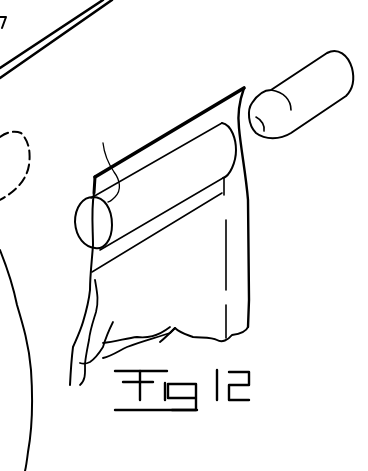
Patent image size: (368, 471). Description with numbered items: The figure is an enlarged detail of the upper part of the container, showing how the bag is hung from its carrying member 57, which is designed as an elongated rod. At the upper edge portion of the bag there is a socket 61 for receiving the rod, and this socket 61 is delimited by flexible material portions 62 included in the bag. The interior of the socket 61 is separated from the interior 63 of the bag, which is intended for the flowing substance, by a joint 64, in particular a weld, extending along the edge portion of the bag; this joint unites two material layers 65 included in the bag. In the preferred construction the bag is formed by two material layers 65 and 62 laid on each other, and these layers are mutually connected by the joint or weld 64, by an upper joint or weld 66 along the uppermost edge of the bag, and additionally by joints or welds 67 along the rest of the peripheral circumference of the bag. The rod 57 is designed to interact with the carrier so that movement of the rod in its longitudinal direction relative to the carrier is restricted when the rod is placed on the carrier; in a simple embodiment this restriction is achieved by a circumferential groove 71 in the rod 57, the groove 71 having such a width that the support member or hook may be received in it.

The carrying member 57 is at (306, 87).
The socket 61 is at (97, 230).
The flexible material portions 62 is at (75, 197).
The interior of the bag 63 is at (84, 317).
The joint 64 is at (163, 222).
The material layers 65 is at (117, 346).
The upper joint 66 is at (167, 142).
The joint 67 is at (241, 263).
The circumferential groove 71 is at (145, 0).